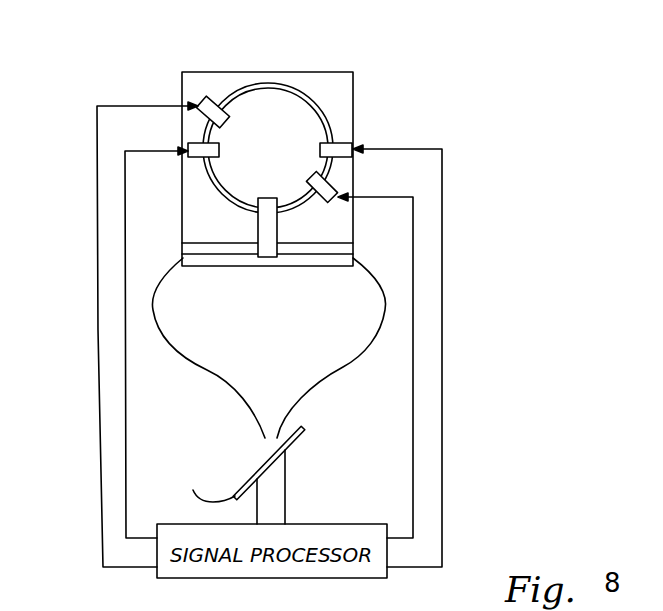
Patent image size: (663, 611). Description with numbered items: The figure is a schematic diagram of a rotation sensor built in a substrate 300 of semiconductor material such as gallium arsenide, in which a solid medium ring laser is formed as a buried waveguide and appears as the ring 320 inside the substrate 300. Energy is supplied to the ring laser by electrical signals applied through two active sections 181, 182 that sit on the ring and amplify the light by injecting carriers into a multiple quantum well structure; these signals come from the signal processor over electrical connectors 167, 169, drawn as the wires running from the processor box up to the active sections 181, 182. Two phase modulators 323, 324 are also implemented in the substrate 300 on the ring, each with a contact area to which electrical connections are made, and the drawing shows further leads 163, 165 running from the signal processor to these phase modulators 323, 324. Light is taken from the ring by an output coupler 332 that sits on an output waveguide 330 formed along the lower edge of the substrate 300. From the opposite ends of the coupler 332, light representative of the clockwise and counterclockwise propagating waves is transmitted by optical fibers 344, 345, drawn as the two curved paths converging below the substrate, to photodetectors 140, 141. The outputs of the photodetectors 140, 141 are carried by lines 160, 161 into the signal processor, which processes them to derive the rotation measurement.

The substrate 300 is at (354, 95).
The annular ring 320 is at (298, 88).
The phase modulator 323 is at (218, 102).
The phase modulator 324 is at (322, 200).
The active section 181 is at (219, 149).
The active section 182 is at (352, 138).
The output waveguide 330 is at (318, 252).
The output coupler 332 is at (265, 258).
The optical fiber 344 is at (345, 367).
The optical fiber 345 is at (207, 371).
The photodetector 140 is at (304, 427).
The photodetector 141 is at (207, 484).
The conductor 160 is at (288, 501).
The conductor 161 is at (257, 511).
The wire 163 is at (413, 280).
The wire 165 is at (97, 320).
The electrical connector 167 is at (443, 368).
The electrical connector 169 is at (126, 400).